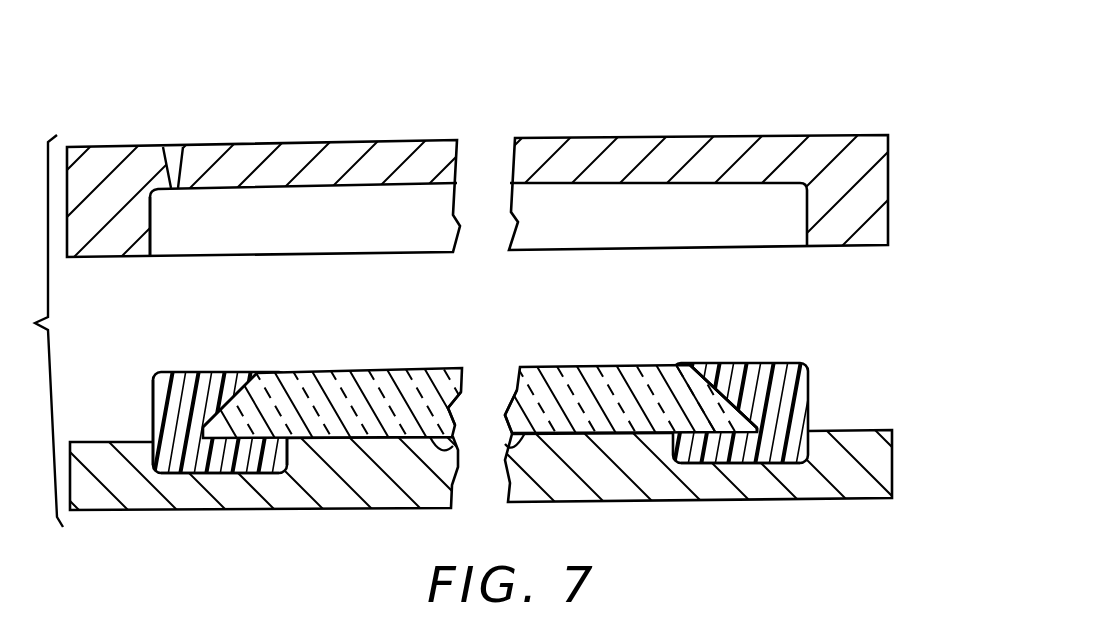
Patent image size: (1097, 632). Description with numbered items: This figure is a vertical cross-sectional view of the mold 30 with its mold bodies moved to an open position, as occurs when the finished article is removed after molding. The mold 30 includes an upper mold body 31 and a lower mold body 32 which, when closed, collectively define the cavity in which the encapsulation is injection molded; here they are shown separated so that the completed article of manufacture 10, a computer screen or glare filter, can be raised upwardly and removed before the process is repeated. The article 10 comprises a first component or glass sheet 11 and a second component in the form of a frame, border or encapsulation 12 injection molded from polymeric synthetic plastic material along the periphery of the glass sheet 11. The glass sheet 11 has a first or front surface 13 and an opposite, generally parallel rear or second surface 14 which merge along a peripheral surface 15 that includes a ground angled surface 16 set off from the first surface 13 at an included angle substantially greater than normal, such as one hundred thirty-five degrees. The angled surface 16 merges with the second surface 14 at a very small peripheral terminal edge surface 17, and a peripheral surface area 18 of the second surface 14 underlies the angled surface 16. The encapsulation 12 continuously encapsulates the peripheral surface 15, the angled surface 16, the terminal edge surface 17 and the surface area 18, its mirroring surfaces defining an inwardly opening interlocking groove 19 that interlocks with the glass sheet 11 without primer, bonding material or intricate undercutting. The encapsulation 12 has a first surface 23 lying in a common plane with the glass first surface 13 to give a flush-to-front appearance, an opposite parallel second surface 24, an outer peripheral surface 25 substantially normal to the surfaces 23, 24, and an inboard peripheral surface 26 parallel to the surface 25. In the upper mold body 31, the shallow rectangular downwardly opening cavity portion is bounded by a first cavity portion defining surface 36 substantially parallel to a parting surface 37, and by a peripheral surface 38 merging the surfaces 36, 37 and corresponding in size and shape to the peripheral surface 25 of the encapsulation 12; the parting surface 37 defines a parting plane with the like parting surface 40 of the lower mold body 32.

The article of manufacture 10 is at (788, 346).
The glass sheet 11 is at (510, 396).
The encapsulation 12 is at (192, 367).
The first surface 13 is at (337, 370).
The second surface 14 is at (512, 442).
The peripheral surface 15 is at (726, 378).
The angled surface 16 is at (728, 382).
The peripheral terminal edge surface 17 is at (758, 427).
The peripheral surface area 18 is at (712, 467).
The interlocking groove 19 is at (712, 398).
The first surface 23 is at (222, 372).
The second surface 24 is at (187, 477).
The peripheral surface 25 is at (150, 393).
The inboard peripheral surface 26 is at (287, 458).
The mold 30 is at (805, 100).
The upper mold body 31 is at (700, 136).
The lower mold body 32 is at (892, 440).
The first cavity portion defining surface 36 is at (307, 188).
The parting surface 37 is at (93, 257).
The peripheral surface 38 is at (150, 233).
The parting surface 40 is at (97, 442).